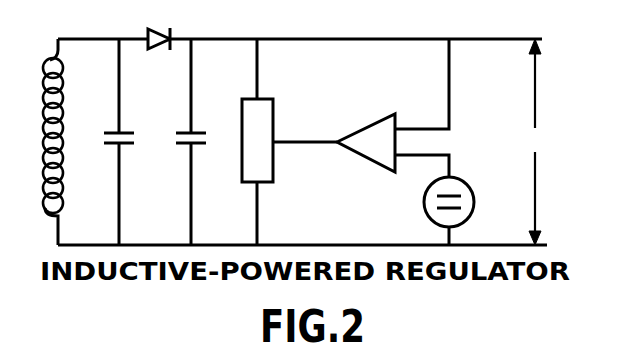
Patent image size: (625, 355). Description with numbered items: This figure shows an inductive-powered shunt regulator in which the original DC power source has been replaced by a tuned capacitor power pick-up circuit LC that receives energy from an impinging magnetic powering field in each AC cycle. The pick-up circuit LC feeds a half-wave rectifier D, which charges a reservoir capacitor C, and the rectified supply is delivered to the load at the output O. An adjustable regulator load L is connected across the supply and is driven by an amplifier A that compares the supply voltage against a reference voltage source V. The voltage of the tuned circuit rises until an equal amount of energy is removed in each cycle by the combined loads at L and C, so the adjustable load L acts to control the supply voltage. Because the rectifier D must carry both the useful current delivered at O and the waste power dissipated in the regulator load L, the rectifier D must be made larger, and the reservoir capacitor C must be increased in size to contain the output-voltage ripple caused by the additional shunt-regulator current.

The rectifier D is at (159, 54).
The tuned capacitor power pick-up circuit LC is at (103, 142).
The reservoir capacitor C is at (188, 142).
The regulator load L is at (289, 142).
The amplifier A is at (393, 108).
The reference voltage source V is at (457, 211).
The output O is at (536, 142).